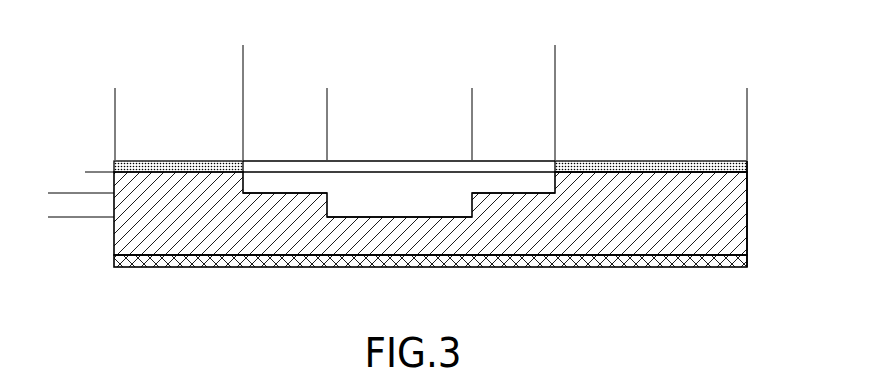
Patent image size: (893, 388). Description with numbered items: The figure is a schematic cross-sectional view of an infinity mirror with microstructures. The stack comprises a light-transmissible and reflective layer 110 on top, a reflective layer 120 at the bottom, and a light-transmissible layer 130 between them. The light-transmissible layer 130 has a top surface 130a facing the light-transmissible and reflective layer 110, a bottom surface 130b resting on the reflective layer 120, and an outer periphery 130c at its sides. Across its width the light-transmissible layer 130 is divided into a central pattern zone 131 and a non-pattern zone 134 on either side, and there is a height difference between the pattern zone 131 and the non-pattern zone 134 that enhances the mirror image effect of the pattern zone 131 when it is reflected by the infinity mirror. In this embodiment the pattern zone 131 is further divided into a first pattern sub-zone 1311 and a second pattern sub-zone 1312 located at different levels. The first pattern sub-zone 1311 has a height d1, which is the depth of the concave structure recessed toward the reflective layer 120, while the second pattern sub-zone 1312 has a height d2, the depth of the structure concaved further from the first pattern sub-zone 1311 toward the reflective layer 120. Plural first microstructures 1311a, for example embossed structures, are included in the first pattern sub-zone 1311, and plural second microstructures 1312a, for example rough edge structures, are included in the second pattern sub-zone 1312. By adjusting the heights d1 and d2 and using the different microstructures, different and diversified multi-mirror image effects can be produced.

The light-transmissible and reflective layer 110 is at (577, 160).
The reflective layer 120 is at (540, 259).
The light-transmissible layer 130 is at (655, 238).
The top surface 130a is at (658, 161).
The bottom surface 130b is at (587, 255).
The outer periphery 130c is at (748, 242).
The pattern zone 131 is at (555, 62).
The first pattern sub-zone 1311 is at (555, 102).
The second pattern sub-zone 1312 is at (327, 102).
The first microstructures 1311a is at (283, 193).
The second microstructures 1312a is at (400, 217).
The non-pattern zone 134 is at (747, 102).
The height of first pattern sub-zone d1 is at (97, 158).
The height of second pattern sub-zone d2 is at (54, 176).